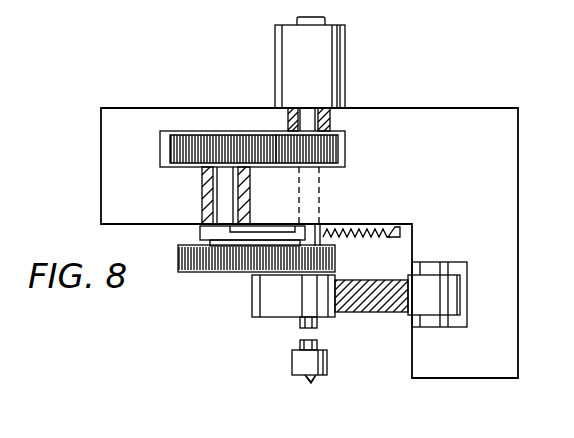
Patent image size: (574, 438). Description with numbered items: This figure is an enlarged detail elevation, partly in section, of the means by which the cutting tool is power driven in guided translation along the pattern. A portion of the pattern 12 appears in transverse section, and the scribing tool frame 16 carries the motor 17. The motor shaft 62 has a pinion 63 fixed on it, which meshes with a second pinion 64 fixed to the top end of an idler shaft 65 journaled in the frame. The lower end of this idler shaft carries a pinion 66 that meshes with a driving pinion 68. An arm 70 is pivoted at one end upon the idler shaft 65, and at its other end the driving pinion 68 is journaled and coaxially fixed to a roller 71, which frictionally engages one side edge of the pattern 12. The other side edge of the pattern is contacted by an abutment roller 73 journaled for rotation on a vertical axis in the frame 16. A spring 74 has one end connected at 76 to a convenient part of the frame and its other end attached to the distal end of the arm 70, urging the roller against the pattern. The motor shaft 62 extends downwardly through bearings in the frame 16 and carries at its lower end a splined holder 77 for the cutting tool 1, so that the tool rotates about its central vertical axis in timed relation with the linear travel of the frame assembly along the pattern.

The cutting tool 1 is at (312, 378).
The pattern 12 is at (370, 302).
The scribing tool frame 16 is at (510, 181).
The motor 17 is at (347, 56).
The motor shaft 62 is at (318, 122).
The pinion 63 is at (322, 153).
The second pinion 64 is at (237, 158).
The idler shaft 65 is at (230, 206).
The pinion 66 is at (212, 262).
The driving pinion 68 is at (328, 256).
The arm 70 is at (258, 233).
The roller 71 is at (266, 292).
The abutment roller 73 is at (428, 298).
The spring 74 is at (341, 236).
The spring connection point 76 is at (394, 231).
The holder 77 is at (296, 361).